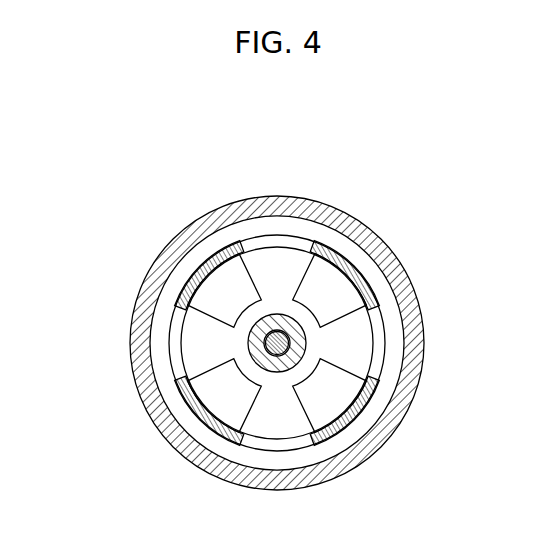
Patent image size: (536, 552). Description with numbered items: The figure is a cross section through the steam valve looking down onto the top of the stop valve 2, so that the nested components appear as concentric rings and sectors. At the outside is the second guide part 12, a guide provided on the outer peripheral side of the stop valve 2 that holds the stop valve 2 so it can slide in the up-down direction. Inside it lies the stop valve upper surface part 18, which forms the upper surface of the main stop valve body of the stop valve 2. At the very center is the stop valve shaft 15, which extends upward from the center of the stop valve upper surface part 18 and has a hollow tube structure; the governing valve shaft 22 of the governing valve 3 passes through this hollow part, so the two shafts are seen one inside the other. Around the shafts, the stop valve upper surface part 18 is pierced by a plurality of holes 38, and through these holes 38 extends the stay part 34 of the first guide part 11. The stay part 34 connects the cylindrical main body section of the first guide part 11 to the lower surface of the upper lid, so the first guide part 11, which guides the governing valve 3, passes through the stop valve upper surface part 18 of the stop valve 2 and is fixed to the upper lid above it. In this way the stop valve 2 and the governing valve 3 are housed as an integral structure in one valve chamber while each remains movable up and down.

The stop valve 2 is at (277, 299).
The stop valve upper surface part 18 is at (277, 263).
The governing valve 3 is at (232, 405).
The first guide part 11 is at (235, 315).
The second guide part 12 is at (355, 448).
The stop valve shaft 15 is at (262, 344).
The governing valve shaft 22 is at (290, 347).
The stay part 34 is at (198, 268).
The holes 38 is at (321, 333).